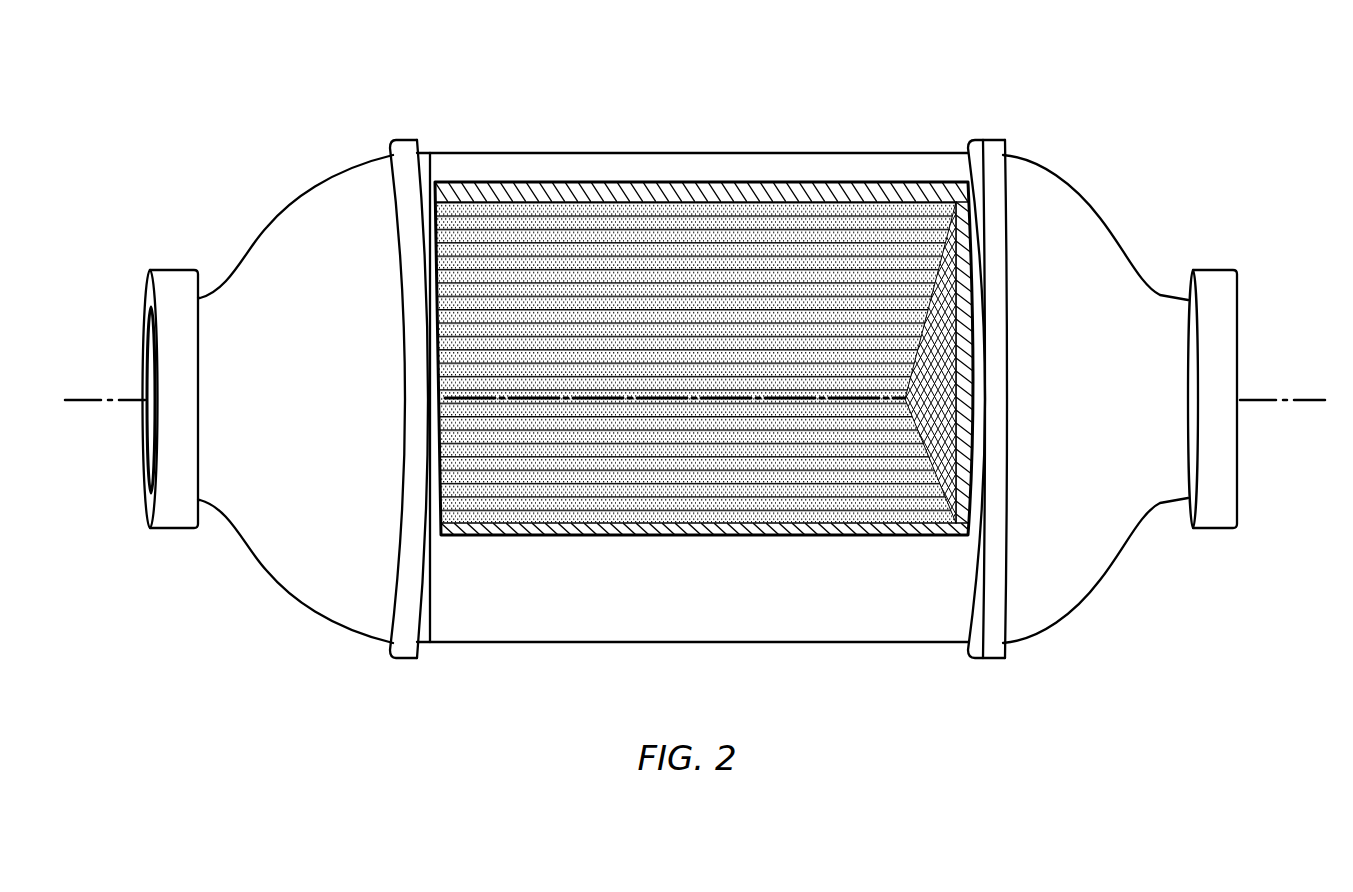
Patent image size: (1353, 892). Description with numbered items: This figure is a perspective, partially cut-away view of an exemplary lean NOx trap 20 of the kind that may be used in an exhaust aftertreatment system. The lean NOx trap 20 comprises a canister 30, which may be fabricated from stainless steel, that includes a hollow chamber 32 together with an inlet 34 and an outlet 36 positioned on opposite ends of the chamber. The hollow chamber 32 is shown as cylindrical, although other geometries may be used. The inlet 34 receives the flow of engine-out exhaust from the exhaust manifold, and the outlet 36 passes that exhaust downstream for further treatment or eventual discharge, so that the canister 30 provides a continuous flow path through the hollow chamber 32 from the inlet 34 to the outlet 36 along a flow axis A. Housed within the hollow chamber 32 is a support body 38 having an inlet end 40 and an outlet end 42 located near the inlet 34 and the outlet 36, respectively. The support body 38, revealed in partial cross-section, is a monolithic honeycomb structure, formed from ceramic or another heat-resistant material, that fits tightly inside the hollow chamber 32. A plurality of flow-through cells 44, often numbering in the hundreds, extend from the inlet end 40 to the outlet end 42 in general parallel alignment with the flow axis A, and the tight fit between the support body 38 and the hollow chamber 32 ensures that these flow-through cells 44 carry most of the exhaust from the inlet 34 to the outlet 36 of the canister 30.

The lean NOx trap 20 is at (1104, 109).
The canister 30 is at (1093, 207).
The hollow chamber 32 is at (857, 153).
The inlet 34 is at (1239, 305).
The outlet 36 is at (141, 341).
The support body 38 is at (755, 190).
The inlet end 40 is at (962, 252).
The outlet end 42 is at (443, 262).
The flow-through cells 44 is at (560, 245).
The flow axis A is at (732, 399).